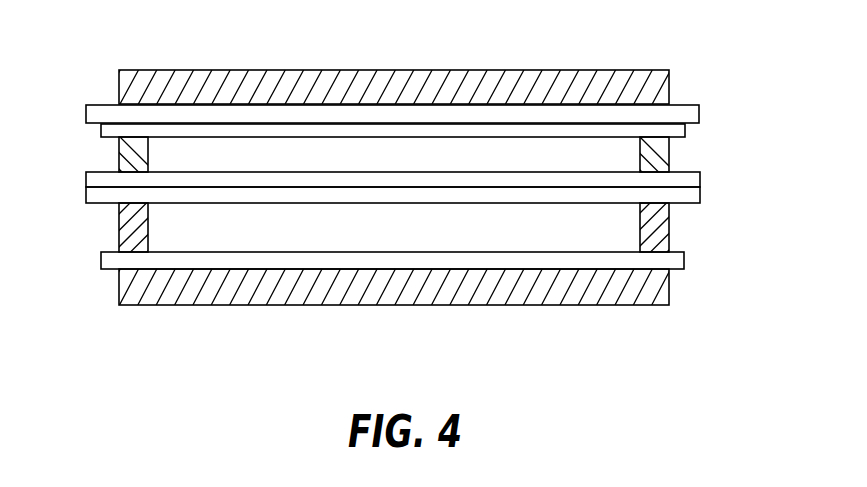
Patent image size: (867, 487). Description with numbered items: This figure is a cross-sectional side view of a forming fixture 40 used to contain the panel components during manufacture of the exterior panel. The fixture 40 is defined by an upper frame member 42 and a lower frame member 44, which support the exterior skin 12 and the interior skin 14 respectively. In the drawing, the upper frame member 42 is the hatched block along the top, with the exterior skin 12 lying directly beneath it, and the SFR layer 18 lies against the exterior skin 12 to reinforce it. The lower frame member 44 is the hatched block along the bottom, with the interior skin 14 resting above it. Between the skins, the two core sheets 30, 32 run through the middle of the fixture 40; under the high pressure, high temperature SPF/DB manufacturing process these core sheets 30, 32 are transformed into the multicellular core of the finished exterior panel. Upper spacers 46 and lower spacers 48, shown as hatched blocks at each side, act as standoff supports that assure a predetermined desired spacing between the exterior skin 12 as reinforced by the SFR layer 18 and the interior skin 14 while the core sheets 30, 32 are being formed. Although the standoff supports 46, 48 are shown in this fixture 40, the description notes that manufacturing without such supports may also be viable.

The fixture 40 is at (152, 41).
The upper frame member 42 is at (538, 78).
The exterior skin 12 is at (697, 115).
The SFR layer 18 is at (333, 131).
The upper spacer 46 is at (118, 148).
The core sheet 30 is at (698, 175).
The core sheet 32 is at (698, 200).
The lower spacer 48 is at (118, 228).
The interior skin 14 is at (658, 261).
The lower frame member 44 is at (555, 293).